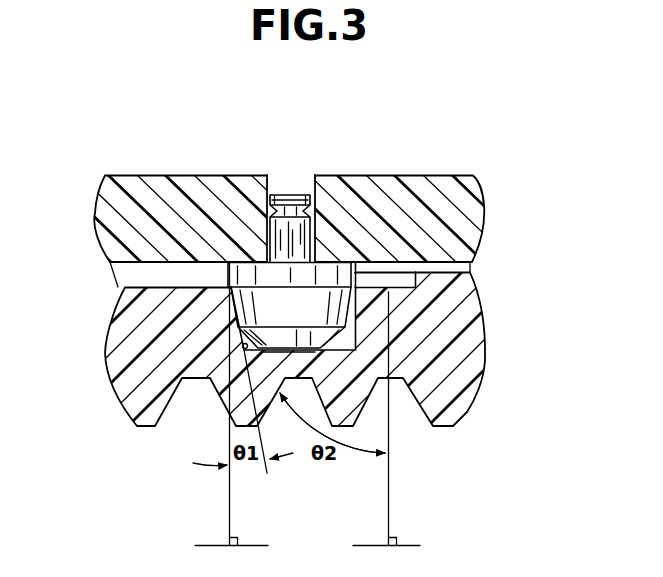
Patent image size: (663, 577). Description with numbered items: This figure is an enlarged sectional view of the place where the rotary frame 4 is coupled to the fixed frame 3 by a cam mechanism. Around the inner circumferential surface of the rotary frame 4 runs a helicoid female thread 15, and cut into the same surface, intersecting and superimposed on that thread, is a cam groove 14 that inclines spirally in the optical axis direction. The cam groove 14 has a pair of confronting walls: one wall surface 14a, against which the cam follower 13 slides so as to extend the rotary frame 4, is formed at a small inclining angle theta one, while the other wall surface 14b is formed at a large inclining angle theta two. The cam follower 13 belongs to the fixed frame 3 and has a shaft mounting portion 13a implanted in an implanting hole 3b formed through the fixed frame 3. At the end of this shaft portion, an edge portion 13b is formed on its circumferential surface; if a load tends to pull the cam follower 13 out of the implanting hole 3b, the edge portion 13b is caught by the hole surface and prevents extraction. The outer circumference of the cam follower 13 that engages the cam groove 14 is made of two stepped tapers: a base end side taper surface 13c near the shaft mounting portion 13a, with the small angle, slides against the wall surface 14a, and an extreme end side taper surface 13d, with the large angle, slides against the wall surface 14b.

The fixed frame 3 is at (492, 194).
The implanting hole 3b is at (298, 190).
The cam follower 13 is at (298, 243).
The shaft mounting portion 13a is at (336, 320).
The edge portion 13b is at (268, 201).
The base end side taper surface 13c is at (313, 247).
The extreme end side taper surface 13d is at (263, 352).
The rotary frame 4 is at (478, 338).
The cam groove 14 is at (358, 293).
The wall surface 14a is at (242, 346).
The wall surface 14b is at (388, 323).
The helicoid female thread 15 is at (463, 412).